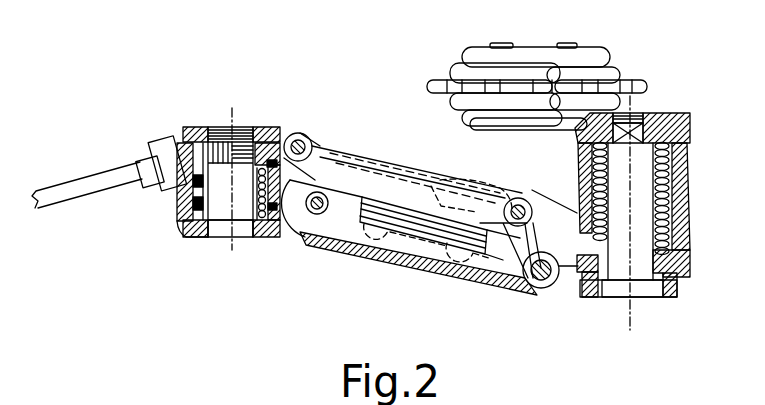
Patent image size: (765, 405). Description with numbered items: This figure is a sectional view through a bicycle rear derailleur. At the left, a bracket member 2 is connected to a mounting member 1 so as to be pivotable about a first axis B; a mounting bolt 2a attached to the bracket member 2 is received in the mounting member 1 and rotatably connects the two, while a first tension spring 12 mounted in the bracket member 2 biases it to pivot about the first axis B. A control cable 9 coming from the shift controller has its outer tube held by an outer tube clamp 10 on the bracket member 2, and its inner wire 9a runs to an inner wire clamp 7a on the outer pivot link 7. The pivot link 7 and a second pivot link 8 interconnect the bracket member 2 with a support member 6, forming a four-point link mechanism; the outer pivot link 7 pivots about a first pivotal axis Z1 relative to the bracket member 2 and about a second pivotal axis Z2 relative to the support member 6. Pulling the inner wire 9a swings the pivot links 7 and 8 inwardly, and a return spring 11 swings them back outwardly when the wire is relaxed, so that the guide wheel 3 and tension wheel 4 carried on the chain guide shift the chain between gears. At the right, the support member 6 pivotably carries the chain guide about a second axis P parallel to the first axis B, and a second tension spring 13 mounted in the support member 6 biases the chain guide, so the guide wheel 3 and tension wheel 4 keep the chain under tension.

The mounting member 1 is at (194, 142).
The bracket member 2 is at (181, 222).
The mounting bolt 2a is at (248, 228).
The guide wheel 3 is at (456, 78).
The tension wheel 4 is at (626, 80).
The support member 6 is at (690, 223).
The pivot link 7 is at (372, 258).
The inner wire clamp 7a is at (430, 172).
The pivot link 8 is at (377, 165).
The control cable 9 is at (103, 170).
The inner wire 9a is at (341, 158).
The outer tube clamp 10 is at (172, 145).
The return spring 11 is at (577, 220).
The first tension spring 12 is at (176, 205).
The second tension spring 13 is at (683, 186).
The first axis B is at (230, 242).
The second axis P is at (633, 318).
The first pivotal axis Z1 is at (317, 214).
The second pivotal axis Z2 is at (540, 296).